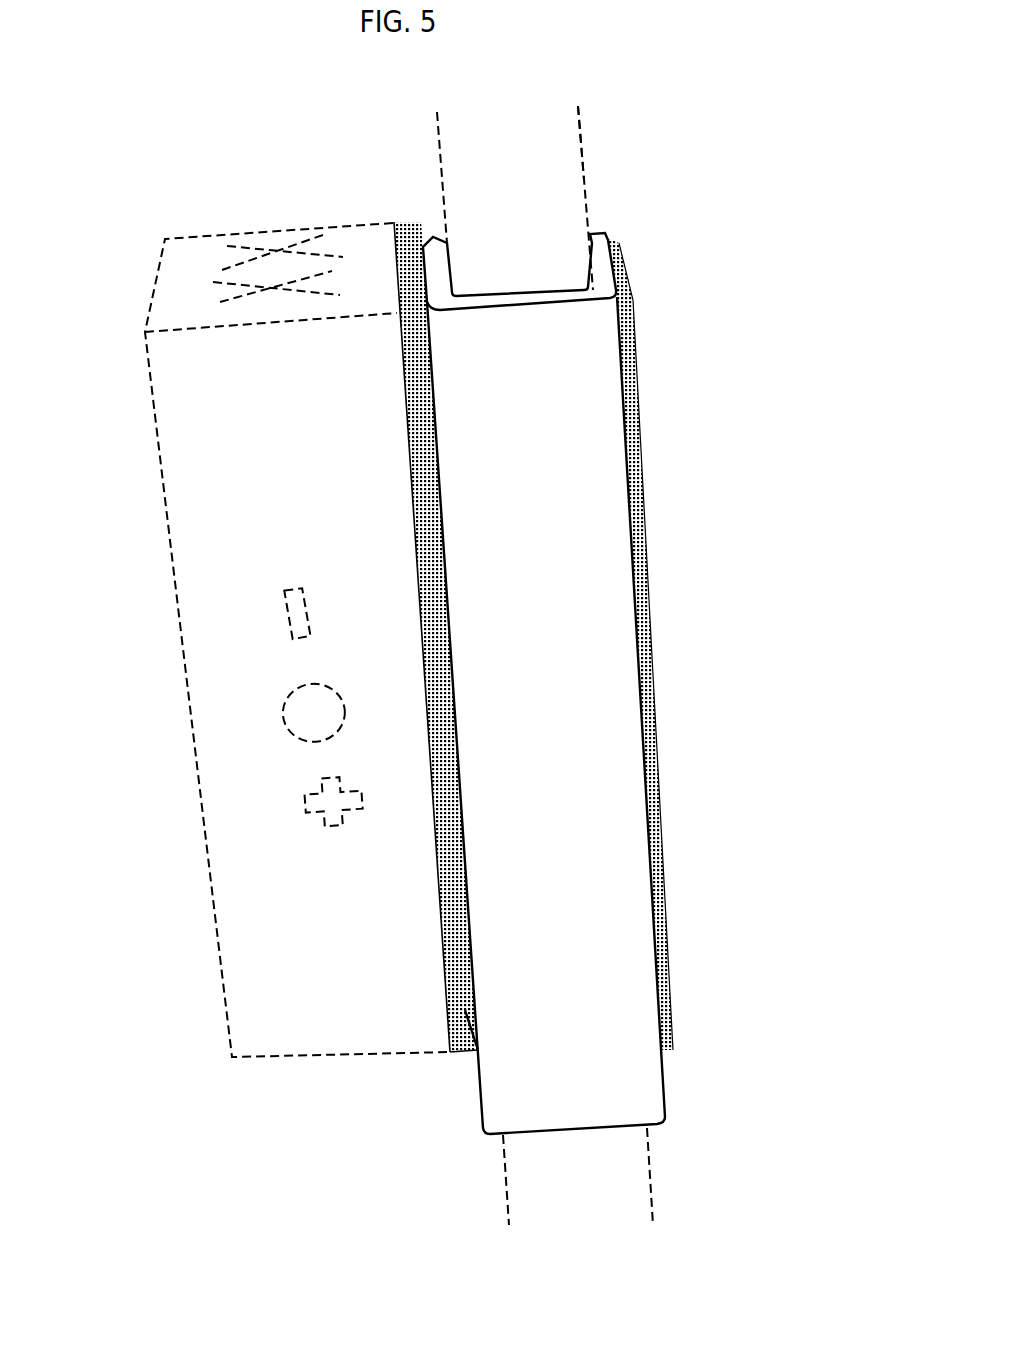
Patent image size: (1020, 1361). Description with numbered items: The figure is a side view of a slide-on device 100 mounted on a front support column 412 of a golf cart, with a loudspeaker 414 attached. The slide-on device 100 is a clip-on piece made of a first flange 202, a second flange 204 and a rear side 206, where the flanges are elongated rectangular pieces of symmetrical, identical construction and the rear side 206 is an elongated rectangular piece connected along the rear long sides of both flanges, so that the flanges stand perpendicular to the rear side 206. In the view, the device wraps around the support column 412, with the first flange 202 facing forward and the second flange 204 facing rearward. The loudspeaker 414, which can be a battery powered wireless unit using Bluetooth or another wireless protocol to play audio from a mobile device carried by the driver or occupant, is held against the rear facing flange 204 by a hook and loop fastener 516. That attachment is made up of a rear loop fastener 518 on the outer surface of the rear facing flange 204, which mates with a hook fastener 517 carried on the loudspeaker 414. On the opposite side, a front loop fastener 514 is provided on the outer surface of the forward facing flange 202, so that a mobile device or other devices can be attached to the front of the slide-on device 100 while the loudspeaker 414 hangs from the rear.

The slide-on device 100 is at (724, 370).
The first flange 202 is at (601, 267).
The second flange 204 is at (433, 240).
The rear side 206 is at (543, 503).
The front support column 412 is at (588, 158).
The loudspeaker 414 is at (207, 863).
The front loop fastener 514 is at (667, 1050).
The hook and loop fastener 516 is at (452, 1016).
The hook fastener 517 is at (457, 1053).
The rear loop fastener 518 is at (478, 1050).